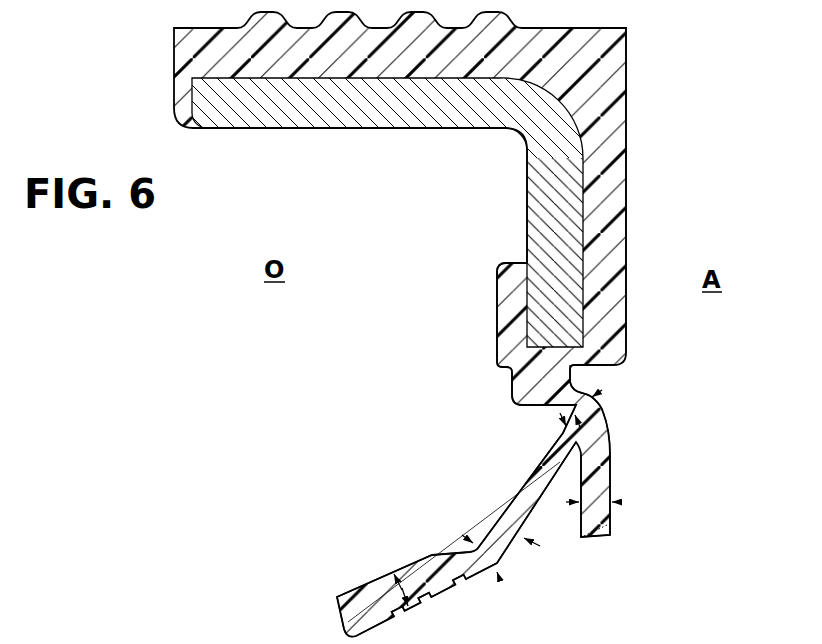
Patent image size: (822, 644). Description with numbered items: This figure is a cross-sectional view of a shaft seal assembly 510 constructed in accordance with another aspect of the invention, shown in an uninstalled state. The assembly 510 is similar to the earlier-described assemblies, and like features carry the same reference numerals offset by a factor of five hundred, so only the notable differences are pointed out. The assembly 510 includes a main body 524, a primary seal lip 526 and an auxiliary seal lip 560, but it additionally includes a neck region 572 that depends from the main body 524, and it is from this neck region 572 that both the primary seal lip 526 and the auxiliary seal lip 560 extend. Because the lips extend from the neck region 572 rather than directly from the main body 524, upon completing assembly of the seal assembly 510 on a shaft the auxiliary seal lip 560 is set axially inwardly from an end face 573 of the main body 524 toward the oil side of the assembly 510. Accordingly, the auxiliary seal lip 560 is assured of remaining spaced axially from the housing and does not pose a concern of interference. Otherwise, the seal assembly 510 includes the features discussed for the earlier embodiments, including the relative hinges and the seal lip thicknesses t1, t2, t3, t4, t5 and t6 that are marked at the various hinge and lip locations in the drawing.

The shaft seal assembly 510 is at (690, 179).
The end face 573 is at (626, 248).
The main body 524 is at (518, 354).
The neck region 572 is at (512, 386).
The primary seal lip 526 is at (372, 573).
The auxiliary seal lip 560 is at (657, 505).
The seal lip thickness t1 is at (402, 588).
The seal lip thickness t2 is at (493, 522).
The seal lip thickness t3 is at (500, 580).
The seal lip thickness t4 is at (562, 419).
The seal lip thickness t5 is at (622, 502).
The seal lip thickness t6 is at (602, 390).